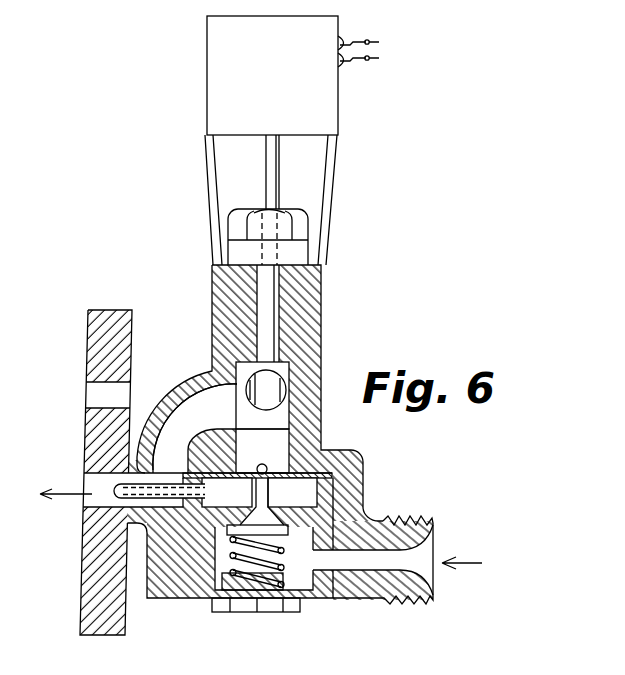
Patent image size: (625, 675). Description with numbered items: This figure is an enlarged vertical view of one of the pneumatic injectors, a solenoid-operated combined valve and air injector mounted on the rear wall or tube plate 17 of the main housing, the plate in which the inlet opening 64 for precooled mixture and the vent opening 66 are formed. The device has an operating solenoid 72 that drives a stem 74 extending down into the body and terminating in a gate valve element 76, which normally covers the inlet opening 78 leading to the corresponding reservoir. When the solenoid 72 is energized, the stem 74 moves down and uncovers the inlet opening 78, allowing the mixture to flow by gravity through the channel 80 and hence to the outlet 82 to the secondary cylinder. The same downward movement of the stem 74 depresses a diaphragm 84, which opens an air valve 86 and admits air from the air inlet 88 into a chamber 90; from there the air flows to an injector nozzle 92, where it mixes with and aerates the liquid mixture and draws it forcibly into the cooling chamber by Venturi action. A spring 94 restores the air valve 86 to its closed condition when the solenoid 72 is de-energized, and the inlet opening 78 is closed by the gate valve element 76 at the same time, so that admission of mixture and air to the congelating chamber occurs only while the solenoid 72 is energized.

The tube plate 17 is at (120, 347).
The inlet opening 64 is at (84, 538).
The vent opening 66 is at (97, 393).
The operating solenoid 72 is at (322, 104).
The stem 74 is at (272, 177).
The gate valve element 76 is at (282, 418).
The inlet opening 78 is at (268, 382).
The channel 80 is at (181, 427).
The outlet 82 is at (93, 478).
The diaphragm 84 is at (285, 468).
The air valve 86 is at (262, 493).
The air inlet 88 is at (430, 548).
The chamber 90 is at (305, 505).
The injector nozzle 92 is at (132, 493).
The spring 94 is at (215, 580).